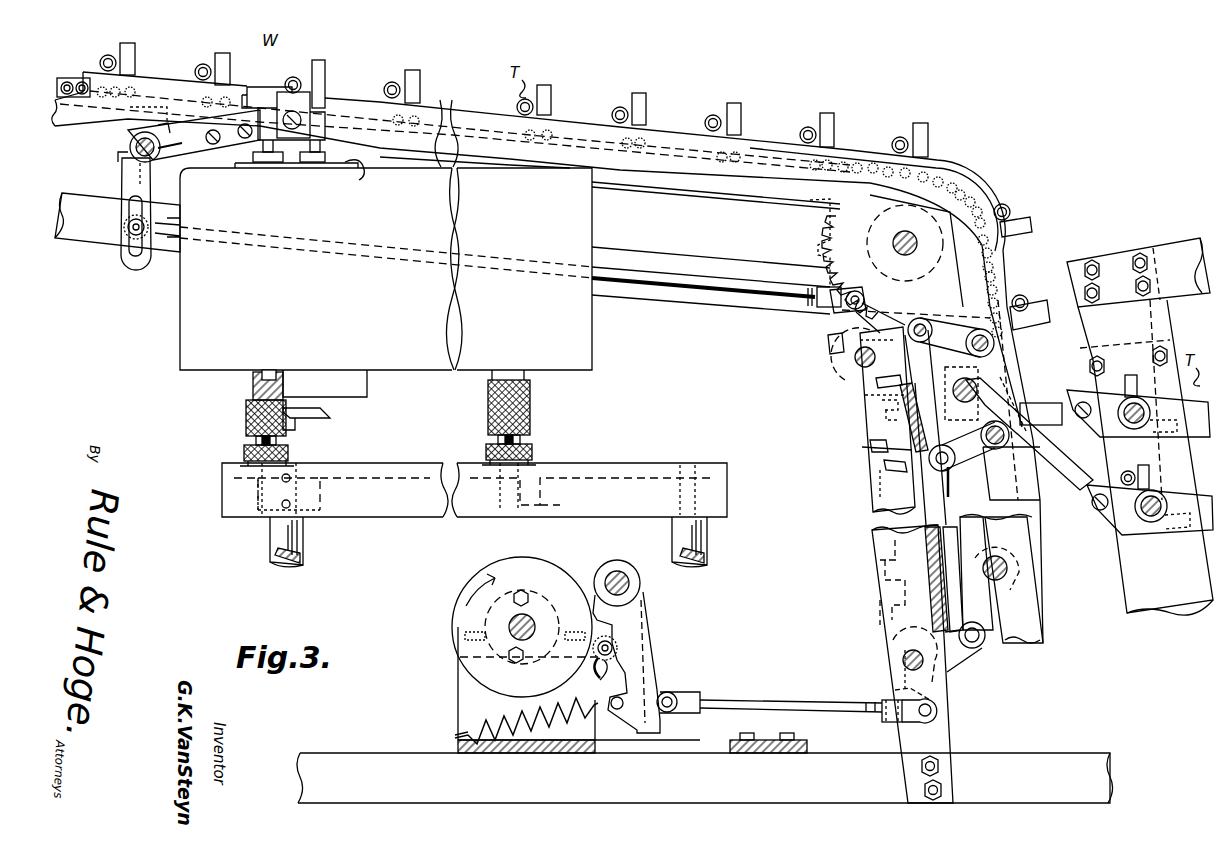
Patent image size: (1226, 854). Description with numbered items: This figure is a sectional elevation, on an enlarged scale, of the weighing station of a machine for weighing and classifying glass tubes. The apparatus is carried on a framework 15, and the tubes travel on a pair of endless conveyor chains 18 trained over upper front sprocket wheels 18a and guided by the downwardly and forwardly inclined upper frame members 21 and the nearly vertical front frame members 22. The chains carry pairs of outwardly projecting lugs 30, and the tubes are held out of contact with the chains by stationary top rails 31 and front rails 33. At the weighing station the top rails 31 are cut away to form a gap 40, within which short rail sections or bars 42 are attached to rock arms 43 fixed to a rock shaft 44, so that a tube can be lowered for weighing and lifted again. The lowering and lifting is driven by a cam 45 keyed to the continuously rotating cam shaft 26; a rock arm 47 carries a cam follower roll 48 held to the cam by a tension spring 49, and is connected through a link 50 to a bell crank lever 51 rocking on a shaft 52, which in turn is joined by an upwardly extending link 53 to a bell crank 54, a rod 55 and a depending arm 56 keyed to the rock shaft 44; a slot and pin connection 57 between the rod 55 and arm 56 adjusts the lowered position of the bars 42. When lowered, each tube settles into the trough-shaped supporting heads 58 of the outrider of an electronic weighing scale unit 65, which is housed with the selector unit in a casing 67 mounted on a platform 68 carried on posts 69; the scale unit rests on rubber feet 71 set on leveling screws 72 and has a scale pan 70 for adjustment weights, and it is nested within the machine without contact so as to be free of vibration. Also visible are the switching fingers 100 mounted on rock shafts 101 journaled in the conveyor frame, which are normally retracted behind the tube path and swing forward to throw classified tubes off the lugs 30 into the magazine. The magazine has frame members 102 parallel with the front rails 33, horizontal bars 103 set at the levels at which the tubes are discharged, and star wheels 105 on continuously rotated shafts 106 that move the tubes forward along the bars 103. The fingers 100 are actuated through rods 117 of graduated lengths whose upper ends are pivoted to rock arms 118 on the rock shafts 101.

The framework 15 is at (1008, 760).
The conveyor chains 18 is at (64, 80).
The upper front sprocket wheels 18a is at (828, 242).
The upper frame members 21 is at (703, 200).
The front frame members 22 is at (969, 704).
The cam shaft 26 is at (508, 623).
The lugs 30 is at (320, 72).
The top rails 31 is at (507, 103).
The front rails 33 is at (1010, 274).
The gap 40 is at (246, 88).
The rail sections or bars 42 is at (328, 98).
The rock arms 43 is at (195, 152).
The rock shaft 44 is at (908, 240).
The cam 45 is at (480, 566).
The rock arm 47 is at (630, 620).
The cam follower roll 48 is at (608, 664).
The tension spring 49 is at (507, 719).
The link 50 is at (802, 702).
The bell crank lever 51 is at (908, 695).
The shaft 52 is at (901, 660).
The link 53 is at (955, 570).
The bell crank 54 is at (830, 322).
The rod 55 is at (688, 295).
The depending arm 56 is at (126, 262).
The slot and pin connection 57 is at (126, 227).
The supporting heads 58 is at (280, 94).
The electronic weighing scale unit 65 is at (359, 178).
The casing 67 is at (594, 350).
The platform 68 is at (620, 450).
The posts 69 is at (300, 542).
The scale pan 70 is at (320, 412).
The feet 71 is at (250, 385).
The leveling screws 72 is at (280, 437).
The fingers 100 is at (1020, 377).
The rock shafts 101 is at (1010, 440).
The frame members 102 is at (1126, 578).
The horizontal bars 103 is at (1167, 402).
The star wheels 105 is at (1150, 480).
The shafts 106 is at (1152, 522).
The rods 117 is at (897, 392).
The rock arms 118 is at (897, 442).